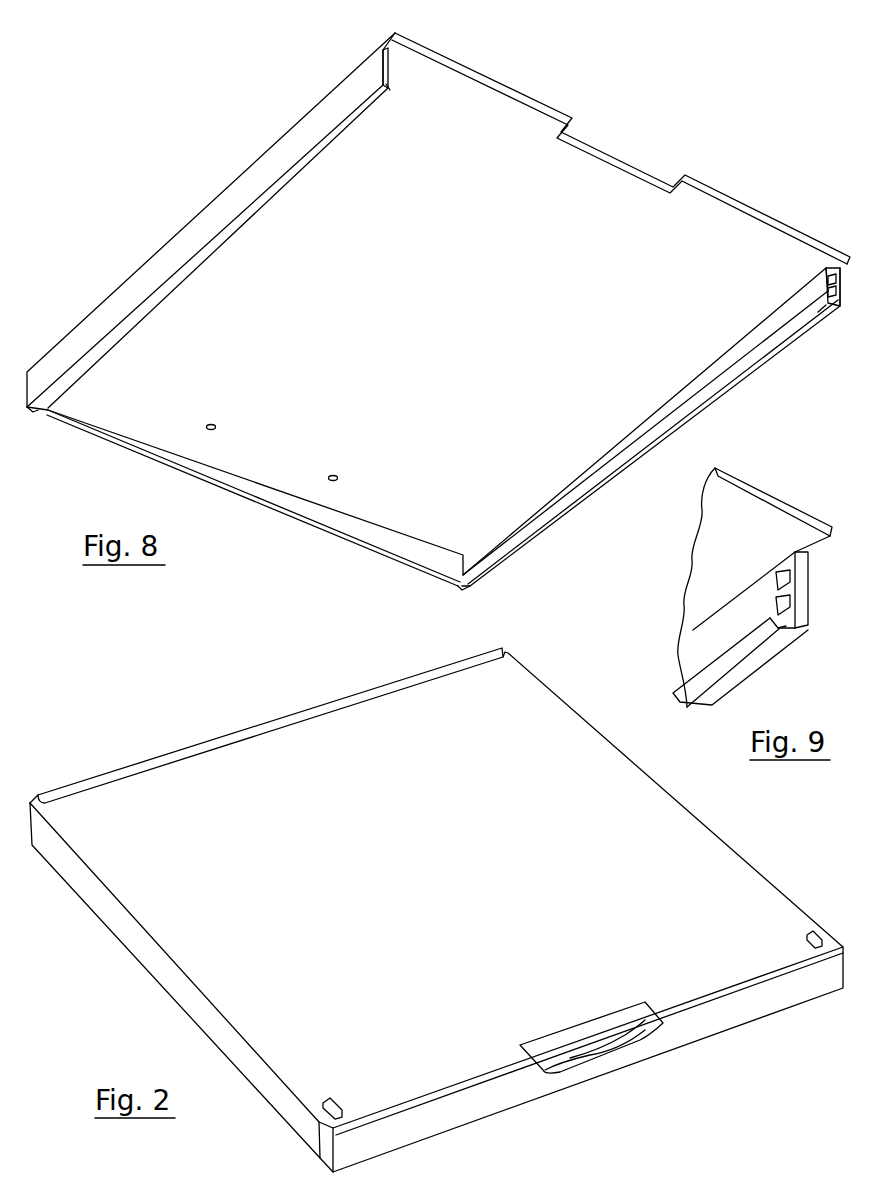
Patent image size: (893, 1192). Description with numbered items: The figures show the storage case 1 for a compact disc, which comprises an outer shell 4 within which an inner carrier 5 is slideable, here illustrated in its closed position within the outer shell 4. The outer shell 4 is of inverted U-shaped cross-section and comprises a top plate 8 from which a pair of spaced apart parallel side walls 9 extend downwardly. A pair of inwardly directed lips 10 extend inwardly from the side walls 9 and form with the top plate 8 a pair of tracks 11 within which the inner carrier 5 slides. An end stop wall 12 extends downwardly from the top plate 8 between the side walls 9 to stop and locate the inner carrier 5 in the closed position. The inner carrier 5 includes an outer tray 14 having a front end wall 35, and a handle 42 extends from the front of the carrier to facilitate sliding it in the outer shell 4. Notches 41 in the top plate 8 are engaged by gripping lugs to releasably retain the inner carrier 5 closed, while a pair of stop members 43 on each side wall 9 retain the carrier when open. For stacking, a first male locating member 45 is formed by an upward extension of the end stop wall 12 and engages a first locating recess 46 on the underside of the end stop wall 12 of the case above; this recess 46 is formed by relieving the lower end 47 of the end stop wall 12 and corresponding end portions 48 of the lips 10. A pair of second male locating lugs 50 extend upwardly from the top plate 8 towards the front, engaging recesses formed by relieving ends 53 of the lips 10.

In FIG. 2, the storage case 1 is at (146, 1006).
In FIG. 8, the outer shell 4 is at (527, 472).
In FIG. 9, the outer shell 4 is at (741, 485).
In FIG. 2, the outer shell 4 is at (713, 862).
In FIG. 2, the inner carrier 5 is at (443, 1117).
In FIG. 8, the top plate 8 is at (705, 202).
In FIG. 9, the top plate 8 is at (762, 518).
In FIG. 2, the top plate 8 is at (187, 773).
In FIG. 8, the side walls 9 is at (181, 251).
In FIG. 9, the side walls 9 is at (809, 623).
In FIG. 2, the side walls 9 is at (87, 893).
In FIG. 8, the lips 10 is at (341, 134).
In FIG. 9, the lips 10 is at (711, 666).
In FIG. 8, the tracks 11 is at (387, 72).
In FIG. 9, the tracks 11 is at (710, 637).
In FIG. 8, the end stop wall 12 is at (203, 460).
In FIG. 2, the outer tray 14 is at (720, 1017).
In FIG. 2, the front end wall 35 is at (760, 1002).
In FIG. 8, the notches 41 is at (222, 428).
In FIG. 2, the handle 42 is at (577, 1073).
In FIG. 8, the stop members 43 is at (826, 279).
In FIG. 9, the stop members 43 is at (790, 574).
In FIG. 2, the first male locating member 45 is at (270, 724).
In FIG. 8, the first locating recess 46 is at (413, 560).
In FIG. 8, the lower end 47 is at (342, 537).
In FIG. 8, the end portions 48 is at (33, 413).
In FIG. 2, the second male locating lugs 50 is at (807, 934).
In FIG. 8, the ends 53 is at (386, 86).
In FIG. 9, the ends 53 is at (780, 650).